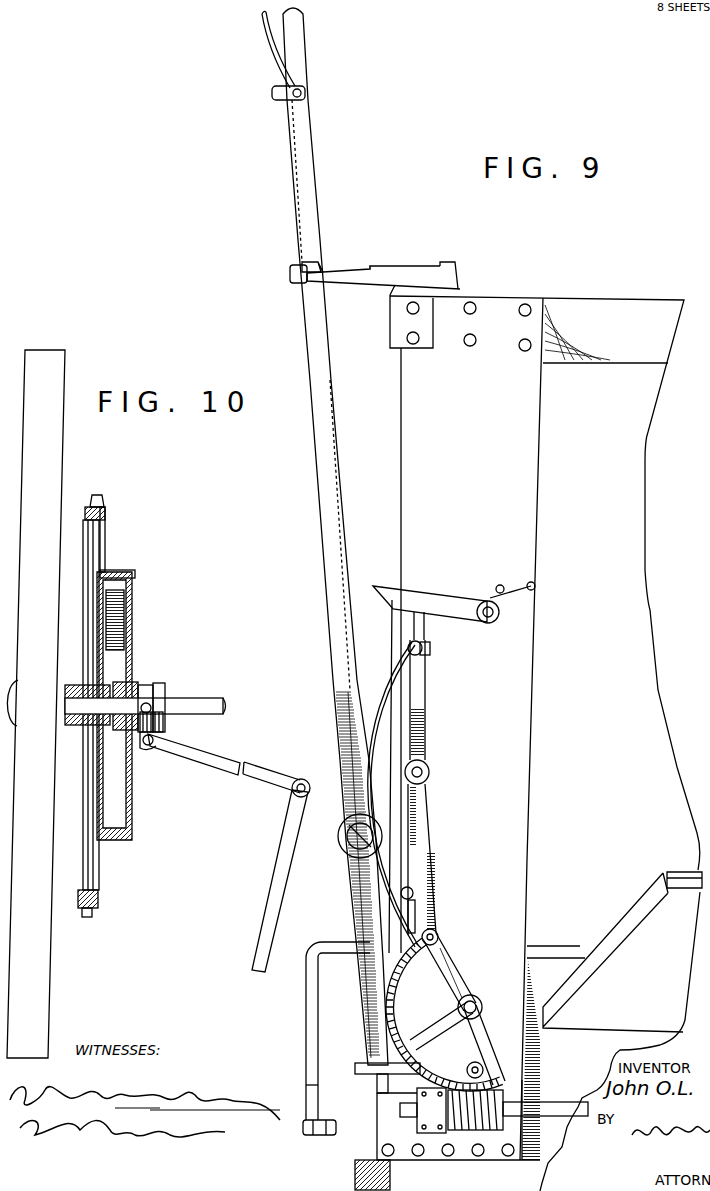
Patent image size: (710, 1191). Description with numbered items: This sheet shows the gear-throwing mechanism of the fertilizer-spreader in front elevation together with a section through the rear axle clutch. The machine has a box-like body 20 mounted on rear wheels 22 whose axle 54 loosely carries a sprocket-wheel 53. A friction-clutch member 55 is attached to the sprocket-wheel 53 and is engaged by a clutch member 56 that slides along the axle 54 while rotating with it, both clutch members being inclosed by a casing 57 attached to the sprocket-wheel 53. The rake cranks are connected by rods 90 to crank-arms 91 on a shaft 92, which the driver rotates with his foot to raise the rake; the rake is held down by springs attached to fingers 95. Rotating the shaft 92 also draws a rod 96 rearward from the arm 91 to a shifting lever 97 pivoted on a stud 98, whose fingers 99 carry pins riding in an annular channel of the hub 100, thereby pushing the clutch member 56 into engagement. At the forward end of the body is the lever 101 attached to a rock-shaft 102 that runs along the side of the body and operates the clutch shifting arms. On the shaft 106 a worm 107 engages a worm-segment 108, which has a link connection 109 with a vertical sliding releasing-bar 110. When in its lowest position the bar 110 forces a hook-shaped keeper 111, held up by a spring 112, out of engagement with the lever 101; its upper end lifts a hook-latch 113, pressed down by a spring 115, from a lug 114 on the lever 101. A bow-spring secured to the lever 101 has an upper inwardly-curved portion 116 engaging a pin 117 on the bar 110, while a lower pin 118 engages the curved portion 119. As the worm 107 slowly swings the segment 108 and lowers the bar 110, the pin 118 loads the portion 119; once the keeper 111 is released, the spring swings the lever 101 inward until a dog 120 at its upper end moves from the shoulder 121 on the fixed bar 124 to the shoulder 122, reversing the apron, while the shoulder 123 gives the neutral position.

In FIG. 9, the box-like body 20 is at (662, 692).
In FIG. 10, the rear wheels 22 is at (50, 970).
In FIG. 10, the sprocket-wheel 53 is at (106, 510).
In FIG. 10, the axle 54 is at (198, 697).
In FIG. 10, the friction-clutch member 55 is at (114, 573).
In FIG. 10, the clutch member 56 is at (134, 590).
In FIG. 10, the casing 57 is at (130, 634).
In FIG. 9, the rods 90 is at (310, 1136).
In FIG. 9, the crank-arms 91 is at (319, 1042).
In FIG. 9, the shaft 92 is at (586, 952).
In FIG. 9, the fingers 95 is at (306, 1090).
In FIG. 10, the rod 96 is at (262, 904).
In FIG. 10, the shifting lever 97 is at (260, 765).
In FIG. 10, the stud 98 is at (150, 748).
In FIG. 10, the fingers 99 is at (164, 725).
In FIG. 10, the hub 100 is at (140, 684).
In FIG. 9, the lever 101 is at (326, 570).
In FIG. 9, the rock-shaft 102 is at (344, 846).
In FIG. 9, the shaft 106 is at (556, 1102).
In FIG. 9, the worm 107 is at (486, 1128).
In FIG. 9, the worm-segment 108 is at (418, 1085).
In FIG. 9, the link connection 109 is at (434, 848).
In FIG. 9, the sliding releasing-bar 110 is at (425, 698).
In FIG. 9, the hook-shaped keeper 111 is at (372, 1076).
In FIG. 9, the spring 112 is at (380, 1092).
In FIG. 9, the hook-latch 113 is at (430, 612).
In FIG. 9, the lug 114 is at (340, 622).
In FIG. 9, the spring 115 is at (466, 598).
In FIG. 9, the upper portion of bow-spring 116 is at (388, 668).
In FIG. 9, the pin 117 is at (431, 649).
In FIG. 9, the pin 118 is at (414, 892).
In FIG. 9, the portion of bow-spring 119 is at (445, 982).
In FIG. 9, the dog 120 is at (322, 268).
In FIG. 9, the shoulder 121 is at (292, 266).
In FIG. 9, the shoulder 122 is at (452, 265).
In FIG. 9, the shoulder 123 is at (377, 268).
In FIG. 9, the fixed bar 124 is at (370, 290).